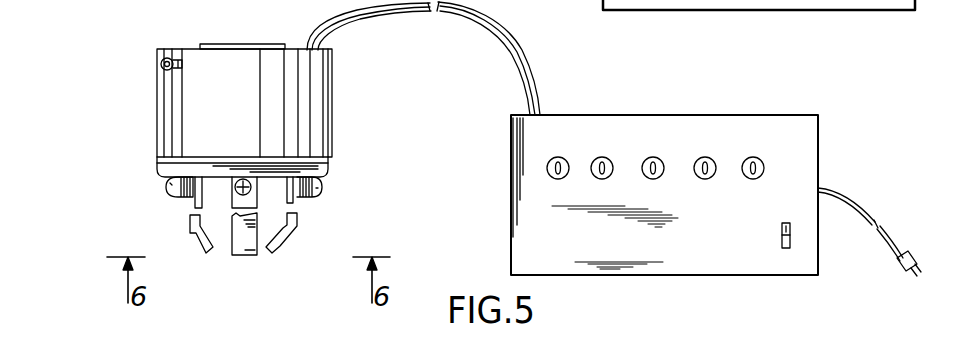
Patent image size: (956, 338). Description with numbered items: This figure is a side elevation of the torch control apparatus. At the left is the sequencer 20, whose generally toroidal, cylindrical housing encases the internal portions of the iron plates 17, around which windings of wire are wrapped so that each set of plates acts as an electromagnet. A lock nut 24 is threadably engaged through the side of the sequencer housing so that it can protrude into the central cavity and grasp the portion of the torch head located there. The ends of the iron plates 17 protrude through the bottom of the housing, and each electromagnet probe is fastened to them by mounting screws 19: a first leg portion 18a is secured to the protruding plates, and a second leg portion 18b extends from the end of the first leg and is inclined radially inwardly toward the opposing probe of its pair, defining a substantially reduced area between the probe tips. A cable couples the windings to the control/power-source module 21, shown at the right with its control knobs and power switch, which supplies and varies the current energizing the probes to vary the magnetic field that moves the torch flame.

The iron plates 17 is at (170, 192).
The first leg portion 18a is at (242, 198).
The second leg portion 18b is at (240, 238).
The mounting screws 19 is at (170, 184).
The sequencer 20 is at (172, 118).
The control/power-source module 21 is at (668, 115).
The lock nut 24 is at (160, 64).